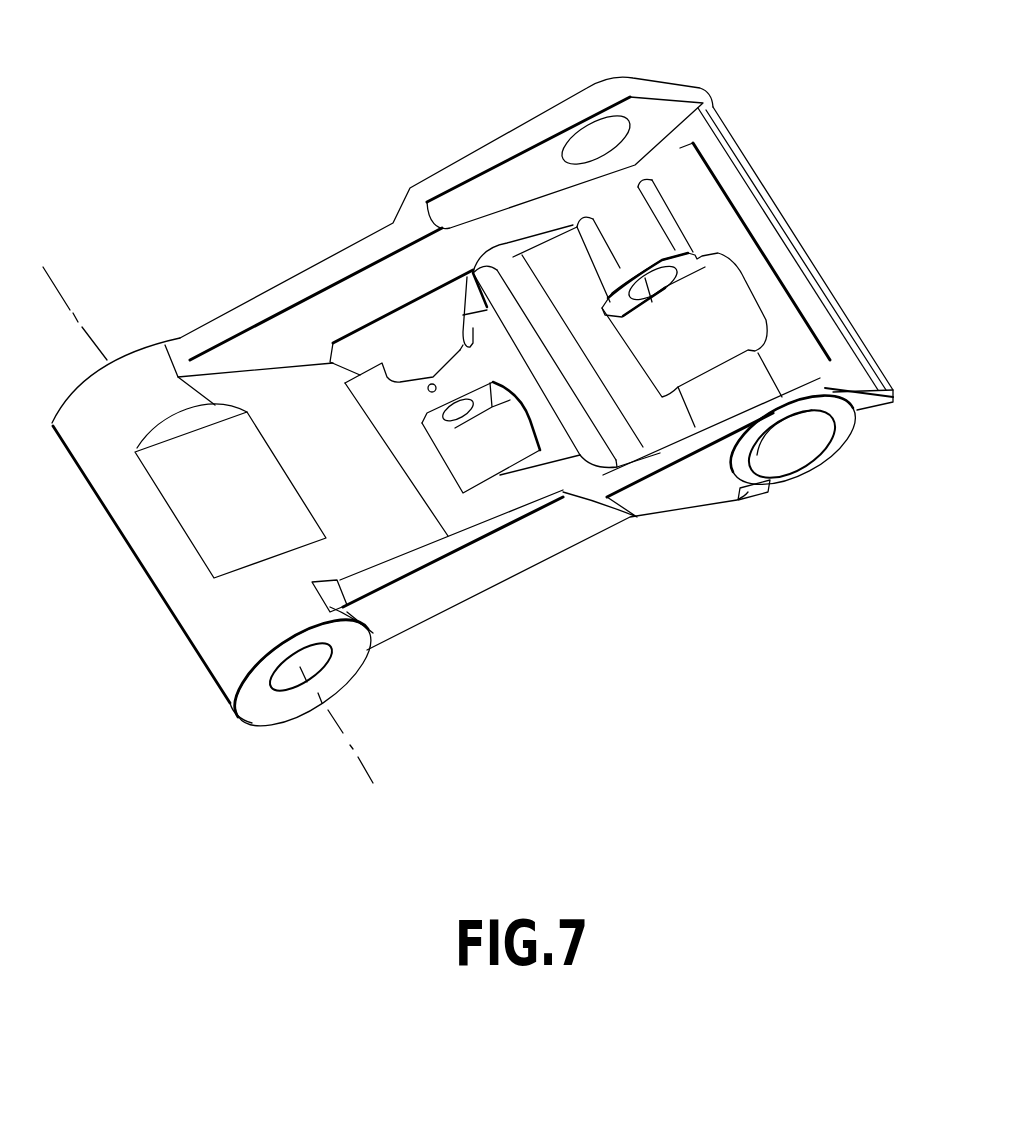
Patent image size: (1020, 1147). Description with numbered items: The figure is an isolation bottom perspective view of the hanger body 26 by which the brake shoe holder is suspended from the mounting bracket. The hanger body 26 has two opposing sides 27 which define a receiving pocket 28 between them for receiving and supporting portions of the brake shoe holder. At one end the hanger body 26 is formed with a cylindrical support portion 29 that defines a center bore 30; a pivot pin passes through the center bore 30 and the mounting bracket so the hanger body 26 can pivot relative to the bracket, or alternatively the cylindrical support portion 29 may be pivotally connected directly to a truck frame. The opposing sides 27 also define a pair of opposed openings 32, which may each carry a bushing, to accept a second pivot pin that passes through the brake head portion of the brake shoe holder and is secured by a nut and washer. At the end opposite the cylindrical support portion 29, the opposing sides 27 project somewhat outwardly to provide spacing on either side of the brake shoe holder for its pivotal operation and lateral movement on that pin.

The hanger body 26 is at (240, 100).
The opposing sides 27 is at (365, 247).
The receiving pocket 28 is at (702, 303).
The cylindrical support portion 29 is at (267, 703).
The center bore 30 is at (317, 667).
The opposed openings 32 is at (597, 142).